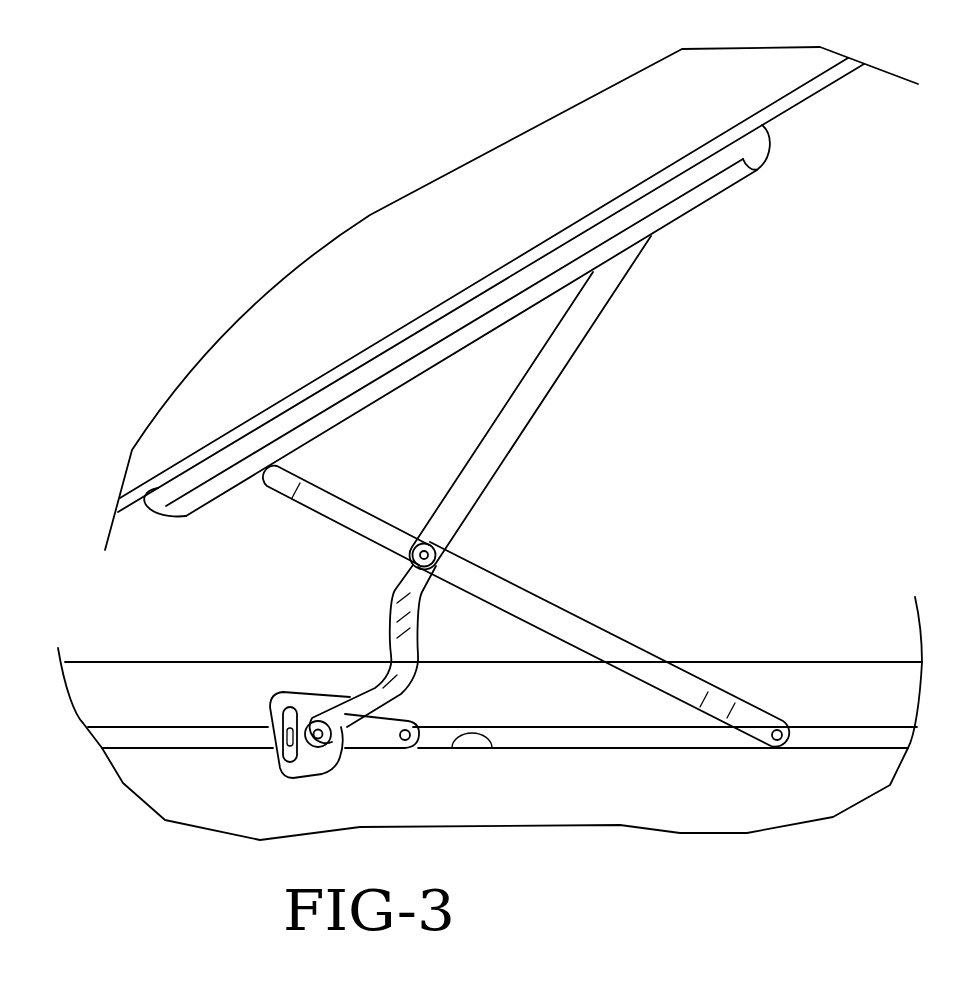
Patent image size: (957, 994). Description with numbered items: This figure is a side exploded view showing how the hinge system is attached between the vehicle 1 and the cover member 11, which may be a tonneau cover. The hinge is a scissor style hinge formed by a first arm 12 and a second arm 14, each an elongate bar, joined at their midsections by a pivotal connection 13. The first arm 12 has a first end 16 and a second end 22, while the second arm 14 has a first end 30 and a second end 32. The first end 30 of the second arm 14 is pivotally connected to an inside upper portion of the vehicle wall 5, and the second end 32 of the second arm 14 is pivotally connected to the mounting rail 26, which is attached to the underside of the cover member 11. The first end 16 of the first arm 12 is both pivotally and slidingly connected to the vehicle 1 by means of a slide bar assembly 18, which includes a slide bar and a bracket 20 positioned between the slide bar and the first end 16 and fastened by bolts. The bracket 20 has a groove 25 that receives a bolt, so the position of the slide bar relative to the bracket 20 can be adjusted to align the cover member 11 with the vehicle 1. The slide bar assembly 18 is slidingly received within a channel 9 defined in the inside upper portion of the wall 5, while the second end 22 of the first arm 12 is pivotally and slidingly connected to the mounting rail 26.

The vehicle 1 is at (810, 787).
The wall 5 is at (683, 817).
The channel 9 is at (492, 748).
The cover member 11 is at (238, 389).
The first arm 12 is at (505, 440).
The pivotal connection 13 is at (470, 543).
The second arm 14 is at (532, 603).
The first end 16 is at (325, 770).
The slide bar assembly 18 is at (306, 650).
The bracket 20 is at (378, 752).
The second end 22 is at (623, 265).
The groove 25 is at (273, 747).
The mounting rail 26 is at (740, 170).
The first end 30 is at (748, 722).
The second end 32 is at (268, 485).